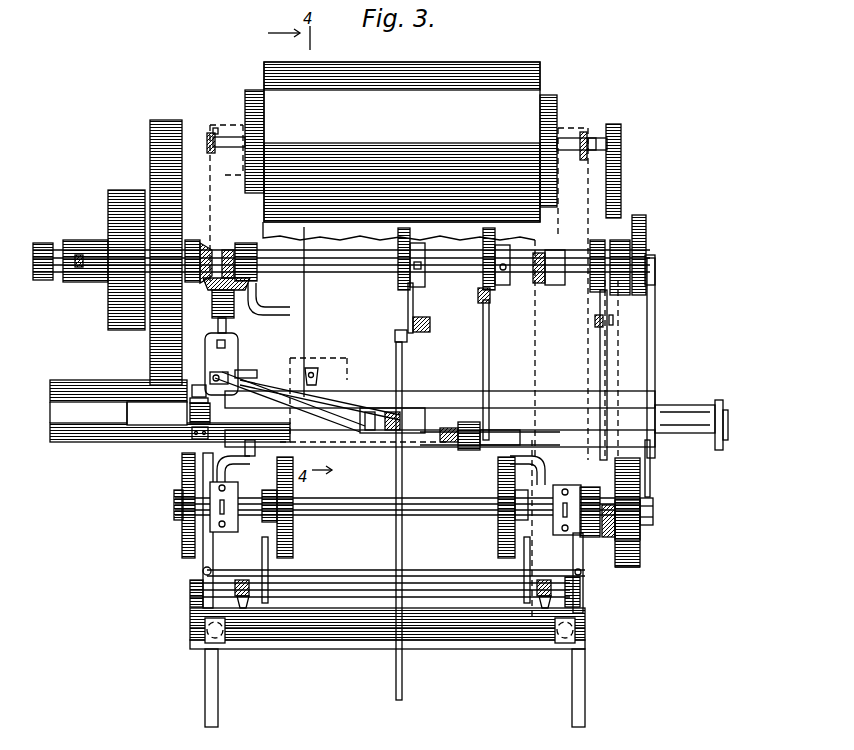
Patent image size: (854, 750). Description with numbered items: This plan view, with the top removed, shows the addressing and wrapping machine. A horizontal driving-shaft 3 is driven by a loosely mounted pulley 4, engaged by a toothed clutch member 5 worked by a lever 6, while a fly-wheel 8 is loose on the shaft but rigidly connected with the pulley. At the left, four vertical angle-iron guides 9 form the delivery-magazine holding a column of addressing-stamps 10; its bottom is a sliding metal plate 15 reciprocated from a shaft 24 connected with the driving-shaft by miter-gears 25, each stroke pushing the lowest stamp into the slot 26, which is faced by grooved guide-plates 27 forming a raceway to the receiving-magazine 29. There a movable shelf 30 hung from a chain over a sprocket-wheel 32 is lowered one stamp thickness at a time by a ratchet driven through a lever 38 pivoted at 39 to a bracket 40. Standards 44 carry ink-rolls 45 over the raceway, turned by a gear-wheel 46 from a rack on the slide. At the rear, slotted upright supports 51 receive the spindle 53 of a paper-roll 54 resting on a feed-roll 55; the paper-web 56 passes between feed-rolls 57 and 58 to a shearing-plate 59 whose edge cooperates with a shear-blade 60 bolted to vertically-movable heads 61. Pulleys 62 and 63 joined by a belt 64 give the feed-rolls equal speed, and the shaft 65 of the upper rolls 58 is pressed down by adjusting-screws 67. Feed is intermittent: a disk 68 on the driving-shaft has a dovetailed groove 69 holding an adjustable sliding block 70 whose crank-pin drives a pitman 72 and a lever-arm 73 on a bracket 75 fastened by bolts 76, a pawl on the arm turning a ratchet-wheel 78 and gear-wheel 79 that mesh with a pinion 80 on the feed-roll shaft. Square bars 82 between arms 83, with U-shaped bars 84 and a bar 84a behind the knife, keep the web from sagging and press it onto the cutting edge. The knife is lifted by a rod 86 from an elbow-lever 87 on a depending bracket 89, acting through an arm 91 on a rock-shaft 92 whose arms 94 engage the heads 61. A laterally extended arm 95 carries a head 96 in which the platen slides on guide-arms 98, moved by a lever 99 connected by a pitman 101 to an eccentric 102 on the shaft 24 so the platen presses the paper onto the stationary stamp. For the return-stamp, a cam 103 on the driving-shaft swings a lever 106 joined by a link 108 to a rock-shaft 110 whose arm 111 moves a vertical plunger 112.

The driving-shaft 3 is at (330, 270).
The pulley 4 is at (126, 190).
The clutch member 5 is at (88, 243).
The lever 6 is at (80, 268).
The fly-wheel 8 is at (150, 122).
The vertical angle-iron guides 9 is at (125, 402).
The addressing-stamps 10 is at (162, 415).
The sliding metal plate 15 is at (50, 414).
The shaft 24 is at (232, 330).
The miter-gears 25 is at (208, 245).
The slot 26 is at (568, 430).
The guide-plates 27 is at (570, 405).
The receiving-magazine 29 is at (672, 405).
The movable shelf 30 is at (728, 428).
The sprocket-wheel 32 is at (723, 415).
The lever 38 is at (600, 352).
The pivot 39 is at (611, 325).
The bracket 40 is at (595, 322).
The vertical standards 44 is at (196, 440).
The ink-rolls 45 is at (210, 413).
The gear-wheel 46 is at (192, 392).
The slotted upright supports 51 is at (216, 128).
The spindle 53 is at (207, 140).
The paper-roll 54 is at (418, 113).
The feed-roll 55 is at (553, 95).
The paper-web 56 is at (399, 231).
The feed-rolls 57 is at (293, 545).
The feed-rolls 58 is at (278, 510).
The shearing-plate 59 is at (585, 628).
The shear-blade 60 is at (475, 649).
The vertically-movable heads 61 is at (212, 640).
The pulley 62 is at (621, 155).
The pulley 63 is at (590, 487).
The belt 64 is at (617, 193).
The shaft 65 is at (455, 515).
The adjusting-screws 67 is at (220, 510).
The disk 68 is at (646, 235).
The dovetailed groove 69 is at (640, 265).
The sliding block 70 is at (655, 268).
The pitman 72 is at (655, 305).
The lever-arm 73 is at (653, 505).
The bracket 75 is at (228, 532).
The bolts 76 is at (382, 474).
The ratchet-wheel 78 is at (630, 535).
The gear-wheel 79 is at (622, 567).
The pinion 80 is at (615, 520).
The square bars 82 is at (345, 570).
The arms 83 is at (218, 700).
The U-shaped bars 84 is at (265, 540).
The bar 84a is at (365, 640).
The rod 86 is at (403, 360).
The elbow-lever 87 is at (408, 308).
The depending bracket 89 is at (430, 325).
The arm 91 is at (402, 575).
The rock-shaft 92 is at (385, 593).
The arms 94 is at (243, 608).
The arm 95 is at (245, 448).
The head 96 is at (400, 278).
The guide-arms 98 is at (400, 412).
The lever 99 is at (325, 398).
The pitman 101 is at (226, 372).
The eccentric 102 is at (258, 368).
The cam 103 is at (505, 287).
The lever 106 is at (478, 294).
The link 108 is at (489, 360).
The rock-shaft 110 is at (468, 450).
The arm 111 is at (330, 410).
The vertical plunger 112 is at (311, 368).